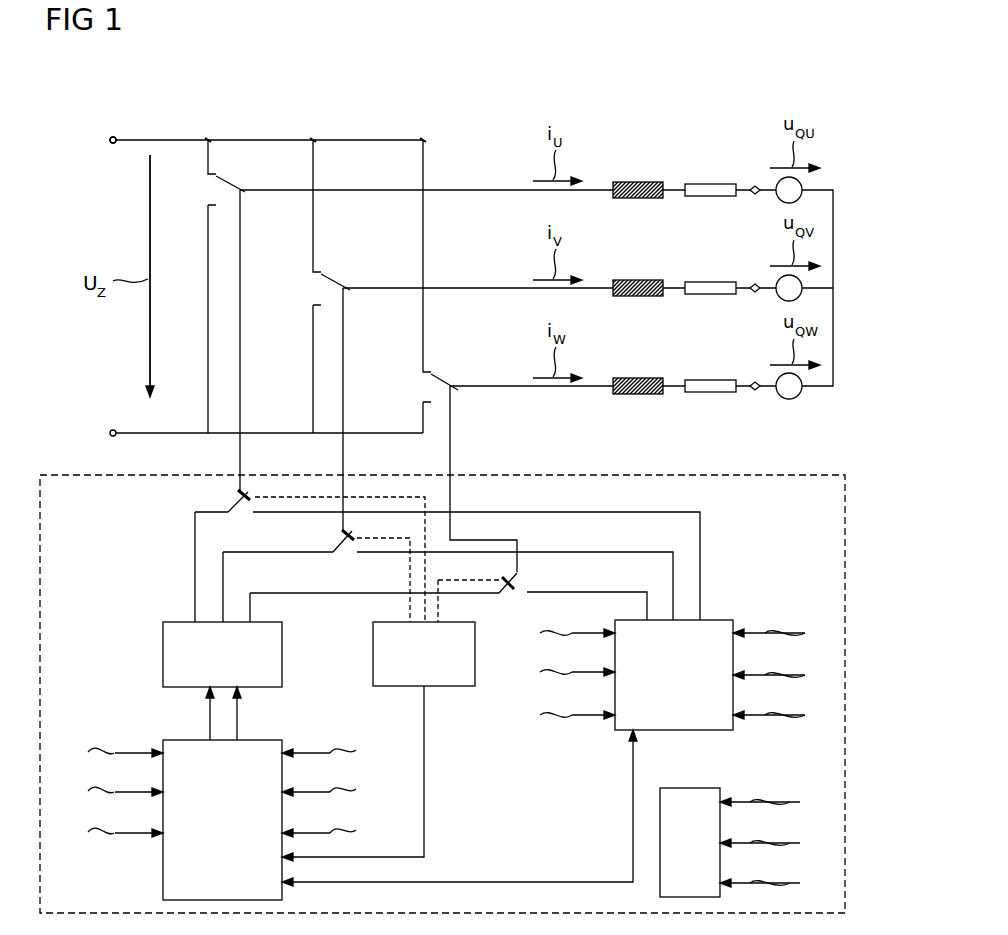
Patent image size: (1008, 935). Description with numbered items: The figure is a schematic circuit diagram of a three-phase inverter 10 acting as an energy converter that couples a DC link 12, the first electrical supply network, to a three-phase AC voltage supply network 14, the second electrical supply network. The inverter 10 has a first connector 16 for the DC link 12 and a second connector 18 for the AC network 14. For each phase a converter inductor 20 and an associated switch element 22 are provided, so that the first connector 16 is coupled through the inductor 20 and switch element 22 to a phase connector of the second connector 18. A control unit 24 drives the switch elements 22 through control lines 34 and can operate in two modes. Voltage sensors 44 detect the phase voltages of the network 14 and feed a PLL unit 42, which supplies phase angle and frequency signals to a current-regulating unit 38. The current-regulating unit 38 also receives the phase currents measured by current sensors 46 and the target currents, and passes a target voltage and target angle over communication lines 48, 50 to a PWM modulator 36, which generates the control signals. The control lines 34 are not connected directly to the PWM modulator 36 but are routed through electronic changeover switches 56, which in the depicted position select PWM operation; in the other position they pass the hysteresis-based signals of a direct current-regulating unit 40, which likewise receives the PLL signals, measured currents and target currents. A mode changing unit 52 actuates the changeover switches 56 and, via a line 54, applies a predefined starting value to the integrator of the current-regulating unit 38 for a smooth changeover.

The three-phase inverter 10 is at (474, 72).
The DC link 12 is at (104, 208).
The three-phase AC voltage supply network 14 is at (805, 74).
The first connector 16 is at (110, 126).
The second connector 18 is at (753, 168).
The converter inductor 20 is at (640, 181).
The switch element 22 is at (245, 181).
The control unit 24 is at (62, 474).
The control lines 34 is at (242, 448).
The PWM modulator 36 is at (284, 655).
The current-regulating unit 38 is at (162, 873).
The direct current-regulating unit 40 is at (716, 620).
The phase-locked loop unit 42 is at (688, 787).
The voltage sensors 44 is at (778, 200).
The current sensors 46 is at (704, 183).
The communication line 48 is at (209, 722).
The communication line 50 is at (239, 722).
The mode changing unit 52 is at (452, 689).
The line 54 is at (426, 797).
The electronic changeover switches 56 is at (226, 503).